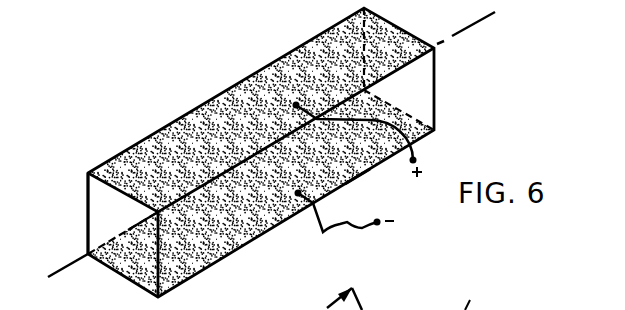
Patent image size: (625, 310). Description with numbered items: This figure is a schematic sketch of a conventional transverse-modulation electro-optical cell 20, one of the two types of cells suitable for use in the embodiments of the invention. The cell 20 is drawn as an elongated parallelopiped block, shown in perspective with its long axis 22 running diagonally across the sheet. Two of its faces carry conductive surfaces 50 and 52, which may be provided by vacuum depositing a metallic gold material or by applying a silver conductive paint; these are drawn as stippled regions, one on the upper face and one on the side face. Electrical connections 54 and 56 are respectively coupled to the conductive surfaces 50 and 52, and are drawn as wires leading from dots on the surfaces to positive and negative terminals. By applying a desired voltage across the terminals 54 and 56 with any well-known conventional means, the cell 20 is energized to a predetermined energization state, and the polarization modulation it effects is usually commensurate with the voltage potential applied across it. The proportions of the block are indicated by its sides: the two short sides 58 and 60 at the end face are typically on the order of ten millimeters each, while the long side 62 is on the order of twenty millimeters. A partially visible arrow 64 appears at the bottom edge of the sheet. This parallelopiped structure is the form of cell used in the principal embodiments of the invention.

The electro-optical cell 20 is at (186, 80).
The optical axis 22 is at (458, 33).
The conductive surface 50 is at (385, 50).
The conductive surface 52 is at (197, 262).
The electrical connection 54 is at (412, 149).
The electrical connection 56 is at (360, 234).
The side 58 is at (122, 279).
The side 60 is at (87, 217).
The side 62 is at (358, 176).
The polarization direction arrow 64 is at (371, 299).